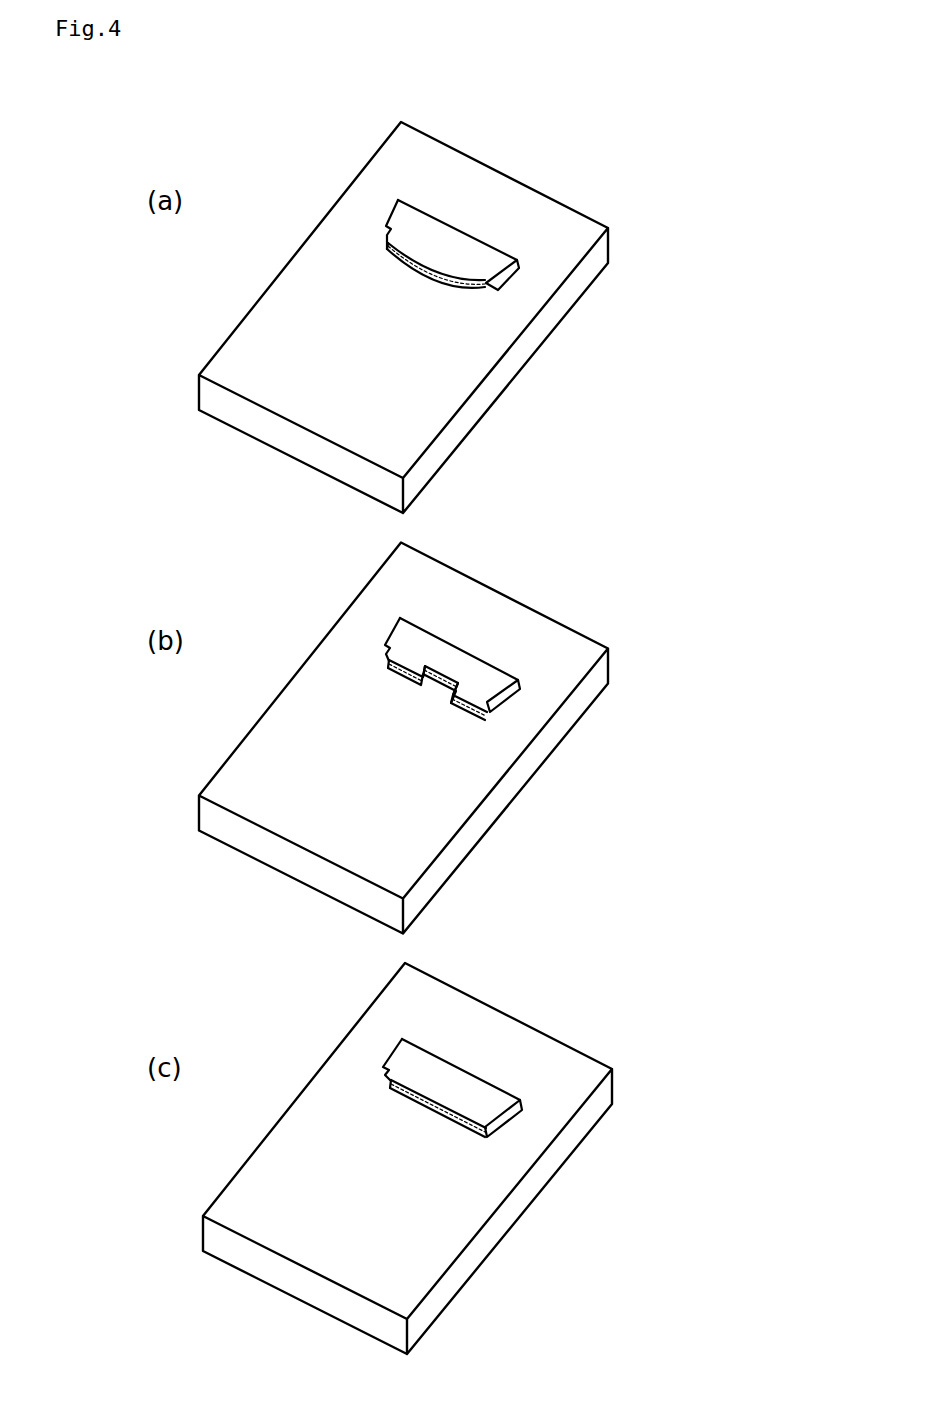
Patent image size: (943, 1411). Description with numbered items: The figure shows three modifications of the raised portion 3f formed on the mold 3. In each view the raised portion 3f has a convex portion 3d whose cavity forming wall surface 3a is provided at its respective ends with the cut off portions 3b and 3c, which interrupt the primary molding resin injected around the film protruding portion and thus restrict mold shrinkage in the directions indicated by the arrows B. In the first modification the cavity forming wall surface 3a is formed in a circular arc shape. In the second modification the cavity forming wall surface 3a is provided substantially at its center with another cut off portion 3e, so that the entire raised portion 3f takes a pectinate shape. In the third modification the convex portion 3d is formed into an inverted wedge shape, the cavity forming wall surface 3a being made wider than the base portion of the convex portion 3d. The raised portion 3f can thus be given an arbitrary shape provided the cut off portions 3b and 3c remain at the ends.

The mold 3 is at (511, 365).
The cavity forming wall surface 3a is at (390, 249).
The cut off portion 3b is at (379, 221).
The cut off portion 3c is at (489, 280).
The convex portion 3d is at (437, 261).
The cut off portion 3e is at (439, 680).
The raised portion 3f is at (423, 203).
The arrows indicating mold shrinkage directions B is at (445, 303).